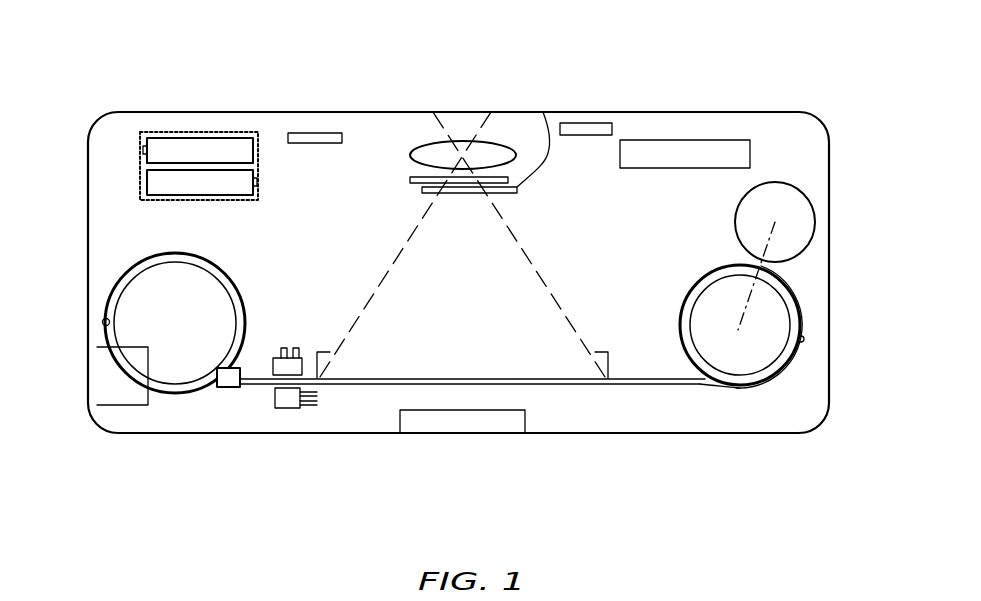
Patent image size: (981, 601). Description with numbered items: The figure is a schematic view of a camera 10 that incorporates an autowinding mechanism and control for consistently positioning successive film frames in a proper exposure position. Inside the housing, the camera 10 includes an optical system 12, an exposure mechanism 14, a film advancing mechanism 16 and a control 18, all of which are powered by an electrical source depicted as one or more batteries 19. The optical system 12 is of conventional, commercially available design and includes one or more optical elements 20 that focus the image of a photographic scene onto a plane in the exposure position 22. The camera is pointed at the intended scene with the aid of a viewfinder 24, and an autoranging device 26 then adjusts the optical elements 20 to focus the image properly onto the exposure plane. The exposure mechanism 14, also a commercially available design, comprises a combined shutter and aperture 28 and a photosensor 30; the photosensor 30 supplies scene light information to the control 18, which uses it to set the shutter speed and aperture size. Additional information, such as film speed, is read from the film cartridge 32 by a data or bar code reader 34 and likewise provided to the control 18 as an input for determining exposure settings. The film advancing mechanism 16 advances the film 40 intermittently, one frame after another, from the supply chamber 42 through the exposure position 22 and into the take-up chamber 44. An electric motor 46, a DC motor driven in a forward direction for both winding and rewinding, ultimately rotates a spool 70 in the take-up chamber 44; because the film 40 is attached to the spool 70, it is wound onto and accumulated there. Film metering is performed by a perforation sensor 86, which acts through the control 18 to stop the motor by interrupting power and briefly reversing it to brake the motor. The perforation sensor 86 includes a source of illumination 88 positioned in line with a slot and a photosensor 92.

The camera 10 is at (108, 90).
The optical system 12 is at (396, 141).
The exposure mechanism 14 is at (520, 124).
The film advancing mechanism 16 is at (802, 268).
The control 18 is at (675, 140).
The batteries 19 is at (197, 130).
The optical elements 20 is at (425, 143).
The exposure position 22 is at (406, 379).
The viewfinder 24 is at (457, 420).
The autoranging device 26 is at (313, 133).
The combined shutter and aperture 28 is at (547, 130).
The photosensor 30 is at (588, 123).
The film cartridge 32 is at (127, 288).
The data or bar code reader 34 is at (118, 395).
The film 40 is at (655, 385).
The supply chamber 42 is at (104, 326).
The take-up chamber 44 is at (804, 340).
The electric motor 46 is at (812, 208).
The spool 70 is at (792, 300).
The perforation sensor 86 is at (228, 404).
The source of illumination 88 is at (273, 374).
The photosensor 92 is at (280, 408).